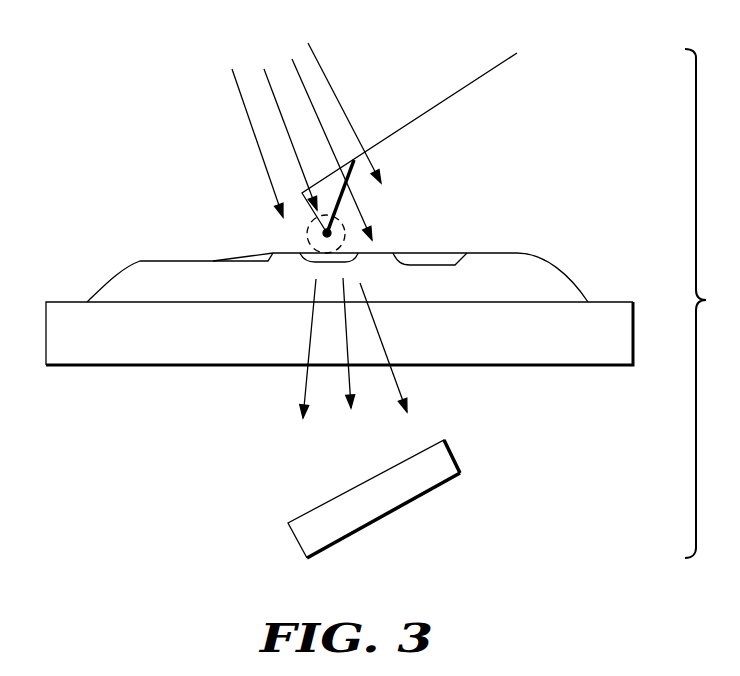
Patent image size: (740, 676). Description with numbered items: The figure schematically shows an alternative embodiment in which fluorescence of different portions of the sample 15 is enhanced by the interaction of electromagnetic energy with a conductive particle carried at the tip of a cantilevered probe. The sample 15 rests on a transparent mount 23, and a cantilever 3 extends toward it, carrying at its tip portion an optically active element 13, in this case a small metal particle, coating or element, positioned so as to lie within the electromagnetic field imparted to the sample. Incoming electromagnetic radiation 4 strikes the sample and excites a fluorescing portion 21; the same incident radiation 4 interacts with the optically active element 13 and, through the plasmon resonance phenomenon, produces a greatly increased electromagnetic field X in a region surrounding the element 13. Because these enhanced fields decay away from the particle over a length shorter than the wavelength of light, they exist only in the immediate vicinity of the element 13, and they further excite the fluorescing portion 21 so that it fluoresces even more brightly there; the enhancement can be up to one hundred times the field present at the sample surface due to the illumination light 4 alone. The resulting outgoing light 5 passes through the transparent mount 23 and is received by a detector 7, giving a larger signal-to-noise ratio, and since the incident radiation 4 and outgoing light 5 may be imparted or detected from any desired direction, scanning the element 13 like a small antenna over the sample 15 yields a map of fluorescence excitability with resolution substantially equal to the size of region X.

The cantilever 3 is at (423, 112).
The incoming electromagnetic radiation 4 is at (222, 83).
The outgoing light 5 is at (272, 410).
The detector 7 is at (462, 470).
The optically active element 13 is at (308, 232).
The sample 15 is at (552, 270).
The fluorescing portion 21 is at (297, 263).
The transparent mount 23 is at (592, 370).
The enhanced electromagnetic field X is at (347, 223).